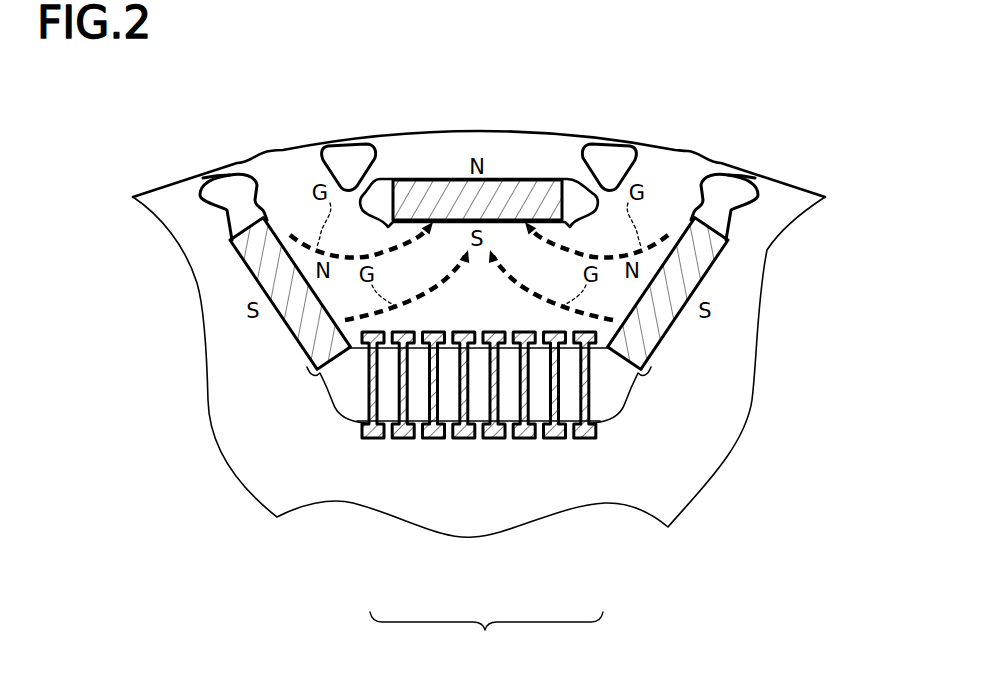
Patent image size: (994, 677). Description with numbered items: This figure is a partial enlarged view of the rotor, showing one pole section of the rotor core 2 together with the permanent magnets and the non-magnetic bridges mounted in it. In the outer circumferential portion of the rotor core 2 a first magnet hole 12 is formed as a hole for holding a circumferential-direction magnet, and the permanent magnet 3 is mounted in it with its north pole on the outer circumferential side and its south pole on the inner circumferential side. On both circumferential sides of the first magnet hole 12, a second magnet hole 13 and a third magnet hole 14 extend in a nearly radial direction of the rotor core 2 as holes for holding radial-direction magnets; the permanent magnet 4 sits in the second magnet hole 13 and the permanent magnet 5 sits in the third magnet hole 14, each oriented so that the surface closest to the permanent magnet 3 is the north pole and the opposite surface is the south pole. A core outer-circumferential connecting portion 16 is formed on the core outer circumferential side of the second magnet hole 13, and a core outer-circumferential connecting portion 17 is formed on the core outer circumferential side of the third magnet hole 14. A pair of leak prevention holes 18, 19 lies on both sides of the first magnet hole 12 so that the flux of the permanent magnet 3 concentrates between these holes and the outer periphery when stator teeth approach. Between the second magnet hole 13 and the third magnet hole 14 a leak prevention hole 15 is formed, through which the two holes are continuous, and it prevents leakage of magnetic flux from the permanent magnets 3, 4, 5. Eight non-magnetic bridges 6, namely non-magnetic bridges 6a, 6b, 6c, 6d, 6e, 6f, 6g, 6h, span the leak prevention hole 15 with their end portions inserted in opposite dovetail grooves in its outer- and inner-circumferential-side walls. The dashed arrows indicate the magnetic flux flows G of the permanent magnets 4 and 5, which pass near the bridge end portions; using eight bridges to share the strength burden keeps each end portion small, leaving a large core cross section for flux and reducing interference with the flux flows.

The rotor core 2 is at (713, 417).
The permanent magnet 3 is at (470, 211).
The permanent magnet 4 is at (283, 300).
The permanent magnet 5 is at (659, 300).
The non-magnetic bridge 6 is at (486, 637).
The non-magnetic bridge 6a is at (373, 440).
The non-magnetic bridge 6b is at (403, 440).
The non-magnetic bridge 6c is at (434, 440).
The non-magnetic bridge 6d is at (464, 440).
The non-magnetic bridge 6e is at (494, 440).
The non-magnetic bridge 6f is at (524, 440).
The non-magnetic bridge 6g is at (554, 440).
The non-magnetic bridge 6h is at (585, 440).
The first magnet hole 12 is at (413, 178).
The second magnet hole 13 is at (253, 190).
The third magnet hole 14 is at (702, 182).
The leak prevention hole 15 is at (327, 403).
The core outer-circumferential connecting portion 16 is at (215, 177).
The core outer-circumferential connecting portion 17 is at (741, 176).
The leak prevention hole 18 is at (354, 146).
The leak prevention hole 19 is at (620, 146).